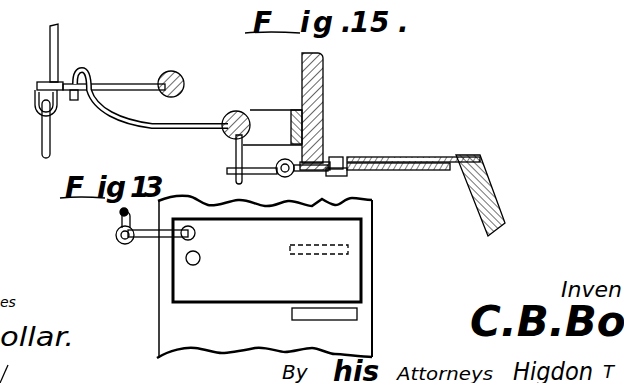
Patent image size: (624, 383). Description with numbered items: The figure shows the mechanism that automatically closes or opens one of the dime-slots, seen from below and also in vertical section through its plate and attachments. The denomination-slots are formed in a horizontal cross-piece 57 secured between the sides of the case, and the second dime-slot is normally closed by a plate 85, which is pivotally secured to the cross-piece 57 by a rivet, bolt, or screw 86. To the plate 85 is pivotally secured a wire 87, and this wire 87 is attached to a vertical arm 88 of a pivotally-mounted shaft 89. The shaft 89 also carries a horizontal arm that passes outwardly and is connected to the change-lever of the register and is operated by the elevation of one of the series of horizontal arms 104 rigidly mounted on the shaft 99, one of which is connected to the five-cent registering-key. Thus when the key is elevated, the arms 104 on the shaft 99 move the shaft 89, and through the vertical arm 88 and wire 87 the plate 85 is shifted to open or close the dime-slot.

In FIG. 15, the horizontal cross-piece 57 is at (463, 156).
In FIG. 15, the plate 85 is at (434, 167).
In FIG. 13, the plate 85 is at (303, 254).
In FIG. 15, the rivet, bolt, or screw 86 is at (345, 154).
In FIG. 13, the rivet, bolt, or screw 86 is at (212, 259).
In FIG. 15, the wire 87 is at (280, 177).
In FIG. 13, the wire 87 is at (151, 240).
In FIG. 15, the vertical arm 88 is at (239, 160).
In FIG. 13, the vertical arm 88 is at (118, 233).
In FIG. 15, the pivotally-mounted shaft 89 is at (262, 116).
In FIG. 15, the shaft 99 is at (173, 87).
In FIG. 15, the horizontal arms 104 is at (115, 60).